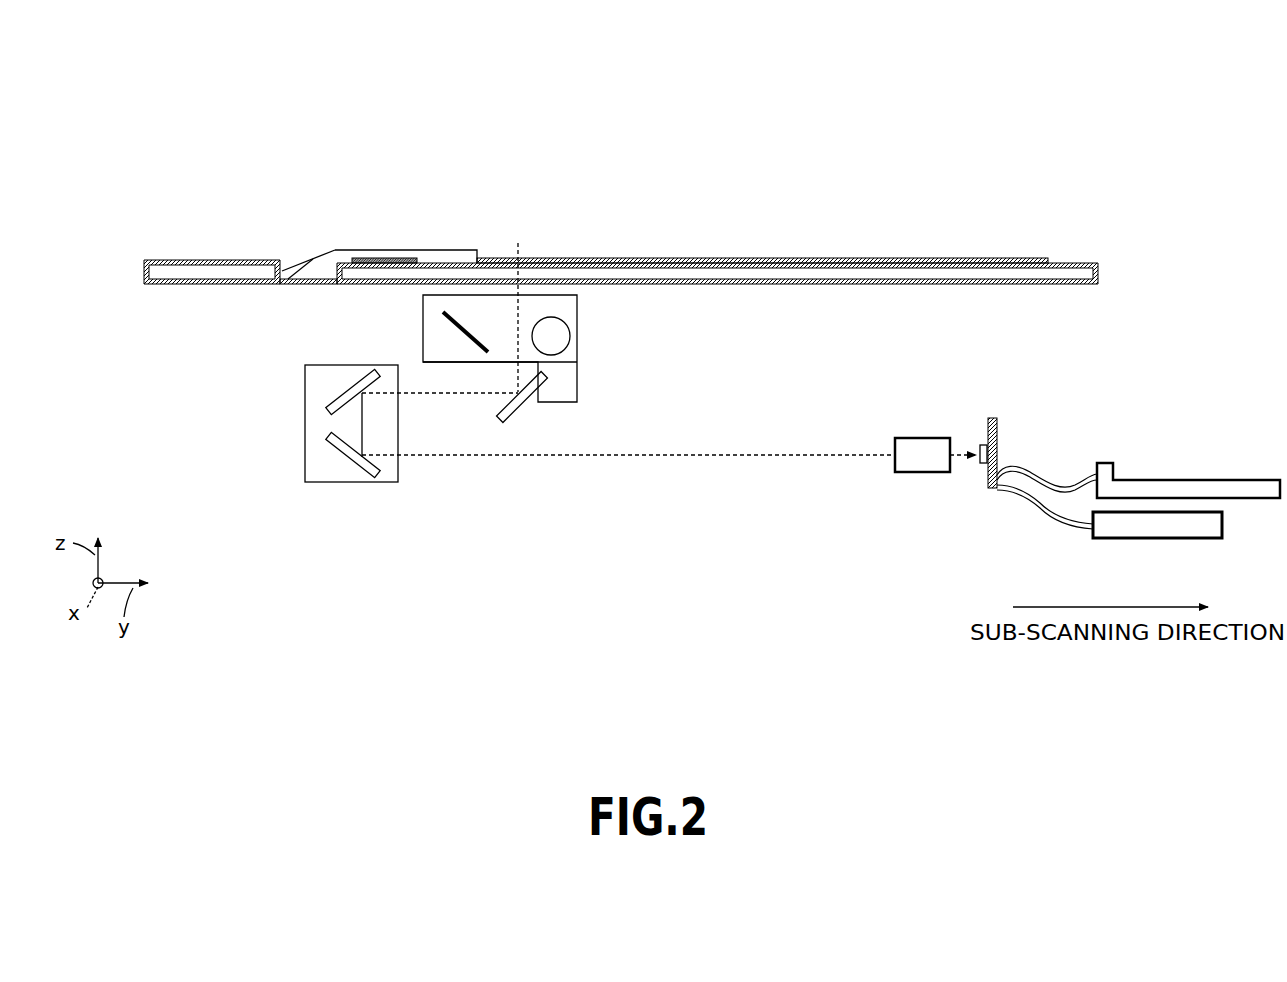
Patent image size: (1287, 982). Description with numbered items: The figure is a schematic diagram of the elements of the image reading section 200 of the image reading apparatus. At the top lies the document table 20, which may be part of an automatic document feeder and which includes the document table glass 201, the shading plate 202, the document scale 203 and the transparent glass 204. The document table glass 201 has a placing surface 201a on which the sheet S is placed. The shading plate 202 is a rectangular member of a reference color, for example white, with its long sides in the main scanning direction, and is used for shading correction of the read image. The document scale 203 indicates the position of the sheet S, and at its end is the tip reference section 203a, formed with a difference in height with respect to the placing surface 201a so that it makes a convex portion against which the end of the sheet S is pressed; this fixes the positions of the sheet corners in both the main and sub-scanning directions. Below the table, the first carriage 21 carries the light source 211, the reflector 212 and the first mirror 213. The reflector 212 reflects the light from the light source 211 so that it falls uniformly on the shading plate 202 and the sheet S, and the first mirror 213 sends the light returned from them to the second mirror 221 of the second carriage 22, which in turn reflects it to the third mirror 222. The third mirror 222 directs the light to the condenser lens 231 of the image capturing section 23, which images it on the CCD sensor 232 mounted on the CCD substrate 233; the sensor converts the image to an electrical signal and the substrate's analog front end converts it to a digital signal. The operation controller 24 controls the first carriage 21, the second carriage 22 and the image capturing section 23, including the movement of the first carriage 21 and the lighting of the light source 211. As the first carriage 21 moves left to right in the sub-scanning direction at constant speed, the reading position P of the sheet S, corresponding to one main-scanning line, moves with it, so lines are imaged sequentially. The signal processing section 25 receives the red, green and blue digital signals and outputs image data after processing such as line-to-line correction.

The image reading section 200 is at (957, 168).
The document table 20 is at (740, 225).
The document table glass 201 is at (744, 285).
The placing surface 201a is at (807, 263).
The shading plate 202 is at (388, 257).
The document scale 203 is at (307, 258).
The tip reference section 203a is at (485, 249).
The transparent glass 204 is at (213, 279).
The first carriage 21 is at (514, 372).
The light source 211 is at (562, 323).
The reflector 212 is at (447, 332).
The first mirror 213 is at (530, 405).
The second carriage 22 is at (569, 436).
The second mirror 221 is at (344, 388).
The third mirror 222 is at (345, 463).
The image capturing section 23 is at (979, 415).
The condenser lens 231 is at (922, 437).
The CCD sensor 232 is at (987, 447).
The CCD substrate 233 is at (1003, 437).
The operation controller 24 is at (1205, 480).
The signal processing section 25 is at (1170, 541).
The reading position P is at (532, 270).
The sheet S is at (624, 257).